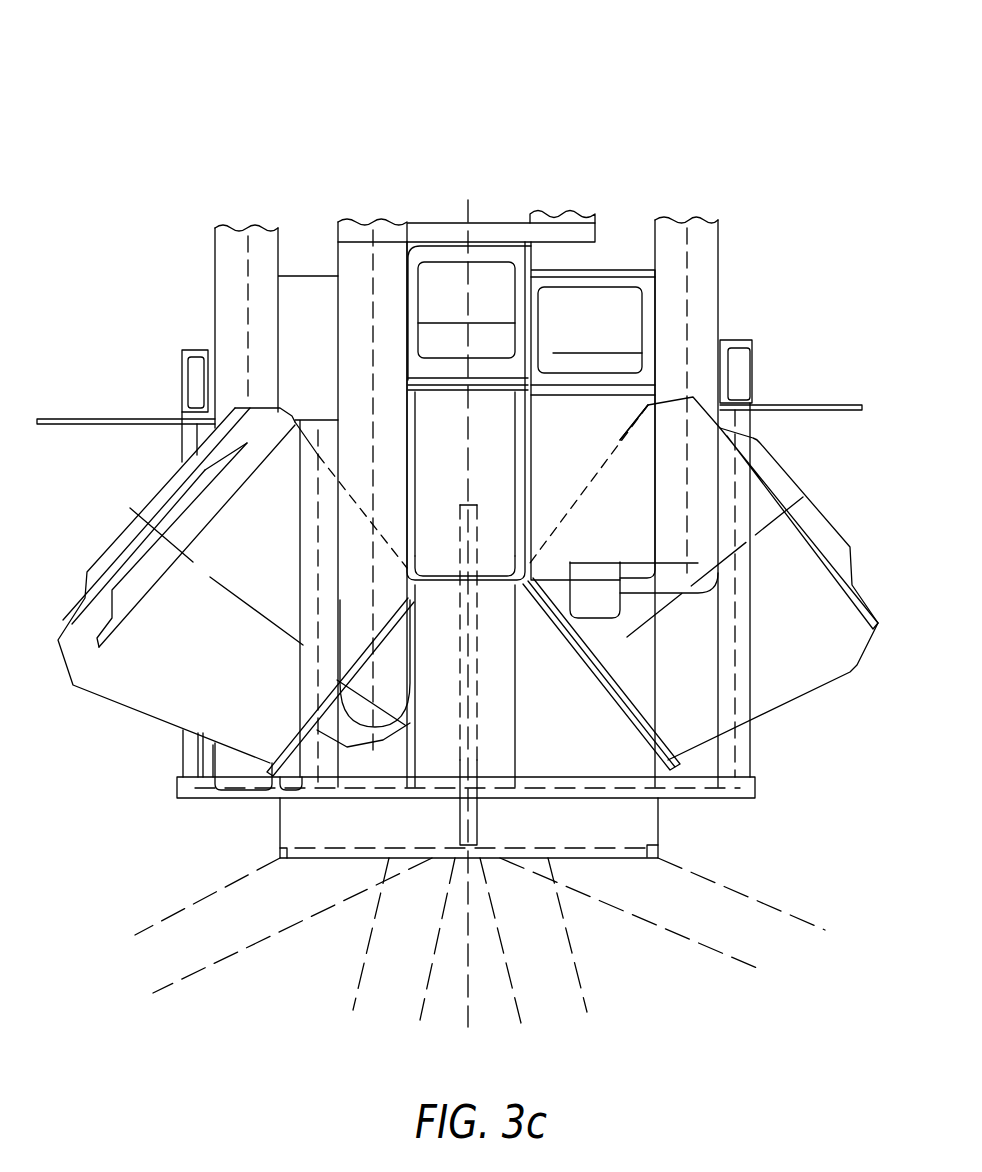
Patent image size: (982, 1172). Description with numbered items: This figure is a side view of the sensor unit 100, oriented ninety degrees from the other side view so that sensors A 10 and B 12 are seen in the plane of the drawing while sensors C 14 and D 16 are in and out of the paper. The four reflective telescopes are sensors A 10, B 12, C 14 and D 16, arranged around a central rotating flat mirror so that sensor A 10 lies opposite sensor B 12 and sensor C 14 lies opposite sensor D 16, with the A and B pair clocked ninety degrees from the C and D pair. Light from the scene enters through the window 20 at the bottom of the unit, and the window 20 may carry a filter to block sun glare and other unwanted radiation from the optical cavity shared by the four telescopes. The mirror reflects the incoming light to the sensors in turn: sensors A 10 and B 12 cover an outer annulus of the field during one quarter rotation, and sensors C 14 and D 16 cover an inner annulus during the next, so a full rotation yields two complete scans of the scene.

The sensor unit 100 is at (663, 87).
The sensor C 14 is at (437, 423).
The sensor D 16 is at (509, 410).
The sensor A 10 is at (203, 632).
The sensor B 12 is at (775, 667).
The window 20 is at (630, 845).